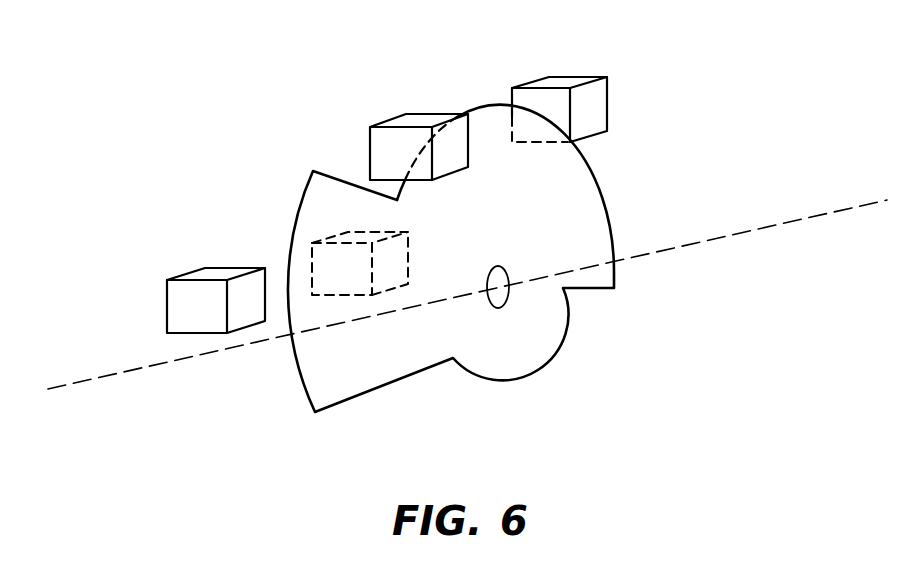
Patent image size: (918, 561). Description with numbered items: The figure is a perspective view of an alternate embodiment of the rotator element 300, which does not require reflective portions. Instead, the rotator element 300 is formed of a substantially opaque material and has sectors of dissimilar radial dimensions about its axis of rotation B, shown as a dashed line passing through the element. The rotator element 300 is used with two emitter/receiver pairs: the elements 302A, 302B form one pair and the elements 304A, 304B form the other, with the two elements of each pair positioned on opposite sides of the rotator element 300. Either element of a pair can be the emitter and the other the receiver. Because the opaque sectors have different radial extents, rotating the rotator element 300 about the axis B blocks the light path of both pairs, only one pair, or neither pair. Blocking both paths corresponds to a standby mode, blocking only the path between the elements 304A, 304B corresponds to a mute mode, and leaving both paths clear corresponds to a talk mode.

The rotator element 300 is at (593, 178).
The emitter/receiver element 302A is at (167, 297).
The emitter/receiver element 302B is at (320, 238).
The emitter/receiver element 304A is at (370, 128).
The emitter/receiver element 304B is at (610, 87).
The axis of rotation B is at (762, 228).